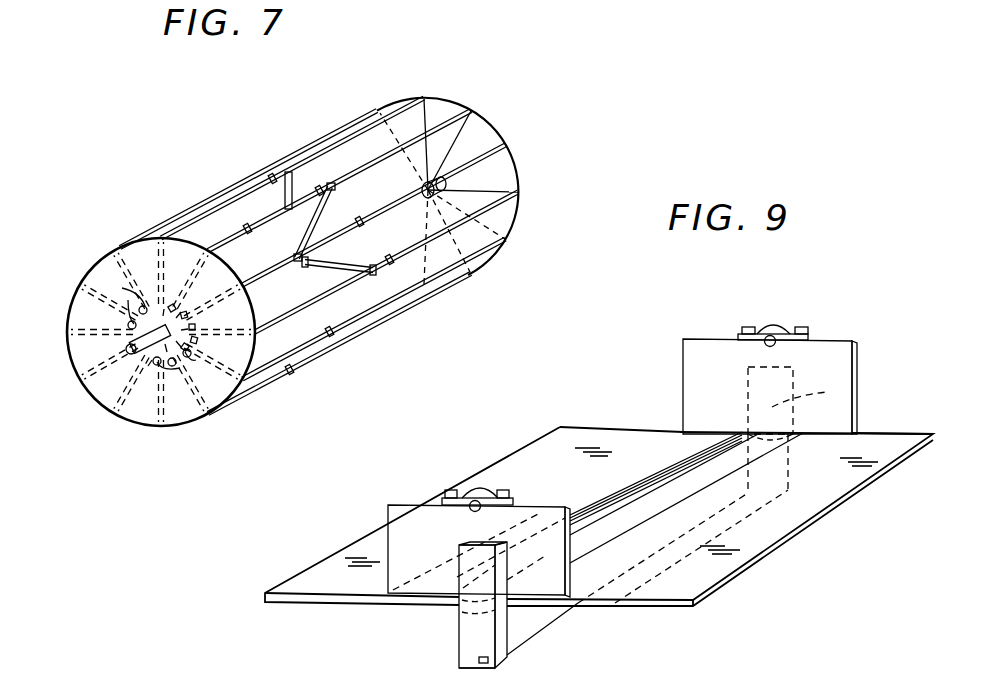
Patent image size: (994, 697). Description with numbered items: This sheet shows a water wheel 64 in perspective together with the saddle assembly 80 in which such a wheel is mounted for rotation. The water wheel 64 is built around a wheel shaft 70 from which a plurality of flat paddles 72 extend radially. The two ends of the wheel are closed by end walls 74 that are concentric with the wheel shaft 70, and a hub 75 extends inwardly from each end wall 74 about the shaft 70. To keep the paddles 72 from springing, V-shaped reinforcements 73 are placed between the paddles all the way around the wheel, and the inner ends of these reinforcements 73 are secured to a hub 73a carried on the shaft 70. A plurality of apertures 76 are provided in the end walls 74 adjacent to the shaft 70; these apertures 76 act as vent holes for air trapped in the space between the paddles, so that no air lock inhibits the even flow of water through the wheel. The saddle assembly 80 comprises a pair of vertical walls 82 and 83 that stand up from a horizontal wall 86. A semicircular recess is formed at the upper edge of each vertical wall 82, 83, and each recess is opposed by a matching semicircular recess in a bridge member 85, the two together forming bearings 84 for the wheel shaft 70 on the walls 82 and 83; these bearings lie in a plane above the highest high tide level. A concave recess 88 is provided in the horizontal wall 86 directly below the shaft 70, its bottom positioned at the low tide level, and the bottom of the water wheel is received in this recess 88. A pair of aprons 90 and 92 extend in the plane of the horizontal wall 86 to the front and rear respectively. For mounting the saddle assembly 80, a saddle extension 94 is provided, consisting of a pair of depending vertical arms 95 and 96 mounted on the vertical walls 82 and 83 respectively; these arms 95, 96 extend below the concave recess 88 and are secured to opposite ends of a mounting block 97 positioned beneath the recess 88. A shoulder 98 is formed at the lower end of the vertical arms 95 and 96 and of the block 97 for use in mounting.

In FIG. 7, the water wheel 64 is at (265, 164).
In FIG. 7, the wheel shaft 70 is at (296, 281).
In FIG. 7, the flat paddles 72 is at (232, 195).
In FIG. 7, the V-shaped reinforcements 73 is at (330, 188).
In FIG. 7, the hub 73a is at (292, 250).
In FIG. 7, the end walls 74 is at (473, 142).
In FIG. 7, the hub 75 is at (460, 180).
In FIG. 7, the apertures 76 is at (142, 293).
In FIG. 9, the saddle assembly 80 is at (577, 386).
In FIG. 9, the vertical wall 82 is at (390, 518).
In FIG. 9, the vertical wall 83 is at (850, 357).
In FIG. 9, the bearings 84 is at (762, 344).
In FIG. 9, the bridge member 85 is at (768, 328).
In FIG. 9, the horizontal wall 86 is at (610, 488).
In FIG. 9, the concave recess 88 is at (705, 485).
In FIG. 9, the apron 90 is at (807, 493).
In FIG. 9, the apron 92 is at (537, 483).
In FIG. 9, the saddle extension 94 is at (450, 631).
In FIG. 9, the vertical arm 95 is at (462, 660).
In FIG. 9, the vertical arm 96 is at (800, 394).
In FIG. 9, the mounting block 97 is at (535, 630).
In FIG. 9, the shoulder 98 is at (486, 665).